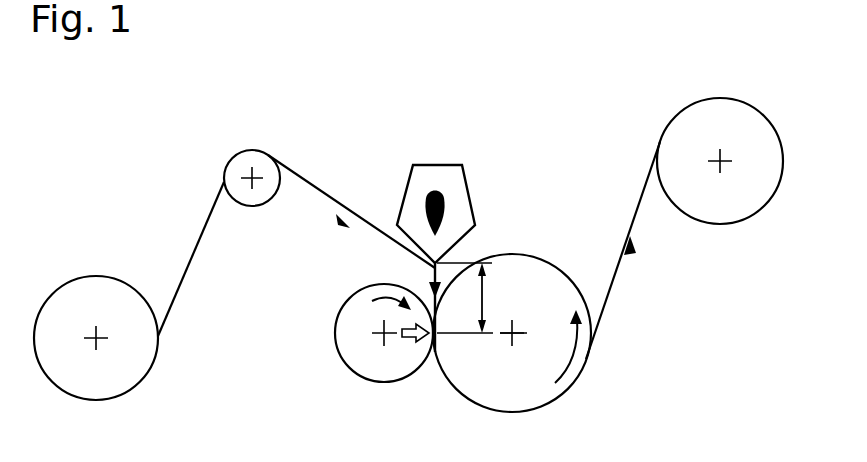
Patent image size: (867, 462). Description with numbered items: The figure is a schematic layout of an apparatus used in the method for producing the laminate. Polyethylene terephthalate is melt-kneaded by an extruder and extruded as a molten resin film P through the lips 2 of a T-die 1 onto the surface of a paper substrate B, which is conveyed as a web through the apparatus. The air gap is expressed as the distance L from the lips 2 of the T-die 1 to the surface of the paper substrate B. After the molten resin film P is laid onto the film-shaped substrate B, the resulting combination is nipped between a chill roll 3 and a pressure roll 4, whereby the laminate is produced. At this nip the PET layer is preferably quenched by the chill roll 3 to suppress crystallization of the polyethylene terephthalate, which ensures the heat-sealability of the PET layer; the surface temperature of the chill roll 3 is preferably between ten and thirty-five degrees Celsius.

The T-die 1 is at (444, 165).
The lips 2 is at (428, 262).
The chill roll 3 is at (544, 392).
The pressure roll 4 is at (381, 383).
The paper substrate B is at (201, 228).
The molten resin film P is at (428, 273).
The distance L is at (485, 295).